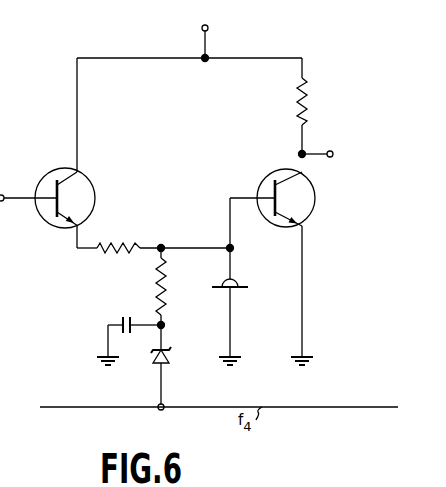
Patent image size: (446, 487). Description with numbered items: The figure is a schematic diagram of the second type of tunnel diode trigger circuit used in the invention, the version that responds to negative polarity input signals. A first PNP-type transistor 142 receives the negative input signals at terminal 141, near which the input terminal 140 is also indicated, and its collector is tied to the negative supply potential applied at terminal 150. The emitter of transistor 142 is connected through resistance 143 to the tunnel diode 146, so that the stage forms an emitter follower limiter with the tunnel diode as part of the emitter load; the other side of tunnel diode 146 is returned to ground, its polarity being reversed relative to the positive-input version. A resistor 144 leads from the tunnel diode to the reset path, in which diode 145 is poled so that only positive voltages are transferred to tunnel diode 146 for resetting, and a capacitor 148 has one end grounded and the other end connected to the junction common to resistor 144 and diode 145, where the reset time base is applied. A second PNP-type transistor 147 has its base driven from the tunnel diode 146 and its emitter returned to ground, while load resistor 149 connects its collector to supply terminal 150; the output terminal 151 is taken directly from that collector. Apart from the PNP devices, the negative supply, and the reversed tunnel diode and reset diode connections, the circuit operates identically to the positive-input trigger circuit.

The output terminal 140 is at (9, 153).
The input terminal 141 is at (2, 202).
The first PNP-type transistor 142 is at (100, 163).
The resistance 143 is at (114, 253).
The resistor 144 is at (164, 280).
The diode 145 is at (167, 357).
The tunnel diode 146 is at (240, 283).
The second PNP-type transistor 147 is at (262, 178).
The capacitor 148 is at (119, 317).
The load resistor 149 is at (298, 100).
The supply terminal 150 is at (208, 28).
The output terminal 151 is at (331, 151).